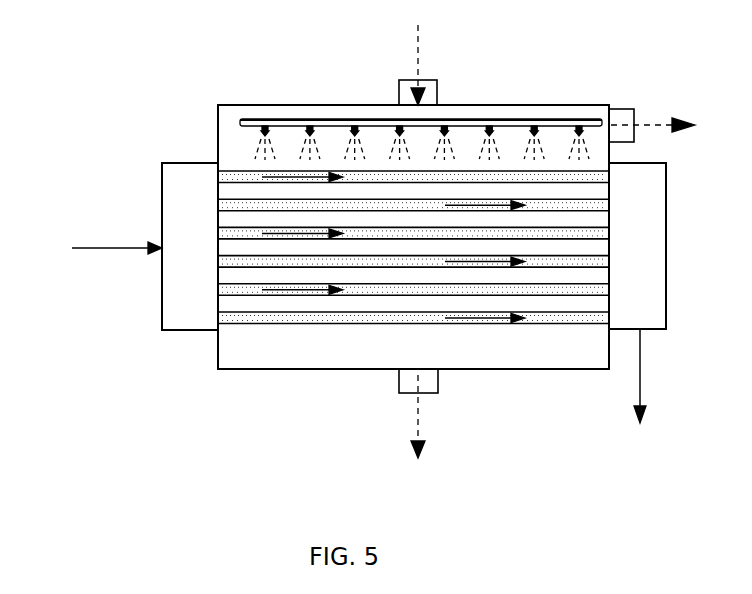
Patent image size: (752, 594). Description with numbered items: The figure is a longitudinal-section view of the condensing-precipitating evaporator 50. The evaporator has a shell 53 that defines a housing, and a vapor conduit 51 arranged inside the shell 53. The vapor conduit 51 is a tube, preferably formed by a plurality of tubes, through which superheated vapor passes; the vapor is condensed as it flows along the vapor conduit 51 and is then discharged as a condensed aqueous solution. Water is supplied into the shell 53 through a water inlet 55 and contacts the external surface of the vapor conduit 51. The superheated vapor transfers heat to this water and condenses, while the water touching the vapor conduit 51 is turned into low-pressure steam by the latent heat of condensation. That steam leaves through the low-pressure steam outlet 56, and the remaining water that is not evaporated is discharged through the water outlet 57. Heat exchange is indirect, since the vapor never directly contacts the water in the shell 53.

The condensing-precipitating evaporator 50 is at (180, 83).
The vapor conduit 51 is at (303, 318).
The shell 53 is at (540, 105).
The water inlet 55 is at (437, 92).
The low-pressure steam outlet 56 is at (624, 109).
The water outlet 57 is at (432, 378).